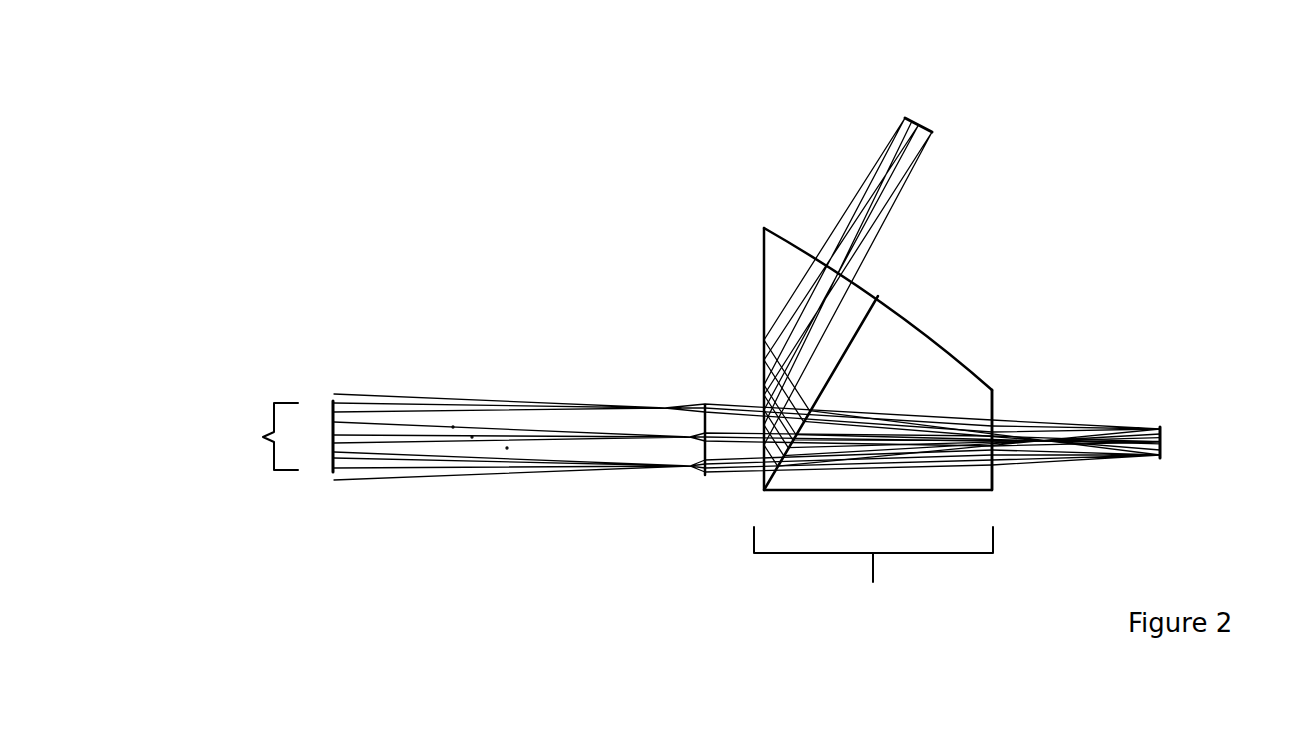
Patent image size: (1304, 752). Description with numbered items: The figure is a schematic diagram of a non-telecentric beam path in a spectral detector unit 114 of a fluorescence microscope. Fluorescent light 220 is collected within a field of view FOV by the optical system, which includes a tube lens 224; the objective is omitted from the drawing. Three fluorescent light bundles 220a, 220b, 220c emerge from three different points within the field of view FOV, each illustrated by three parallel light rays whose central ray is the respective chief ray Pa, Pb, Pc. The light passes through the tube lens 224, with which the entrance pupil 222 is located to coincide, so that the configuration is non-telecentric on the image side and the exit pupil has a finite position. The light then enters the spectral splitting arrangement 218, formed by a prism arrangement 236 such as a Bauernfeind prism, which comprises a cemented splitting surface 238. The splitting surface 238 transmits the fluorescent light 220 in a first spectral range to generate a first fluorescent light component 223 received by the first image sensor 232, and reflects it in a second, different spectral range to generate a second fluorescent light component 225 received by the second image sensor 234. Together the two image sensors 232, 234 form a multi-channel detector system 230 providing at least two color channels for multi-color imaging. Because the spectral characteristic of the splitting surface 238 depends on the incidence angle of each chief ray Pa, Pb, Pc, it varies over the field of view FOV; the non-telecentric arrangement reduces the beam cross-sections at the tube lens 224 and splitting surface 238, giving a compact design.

The spectral detector unit 114 is at (1167, 160).
The field of view FOV is at (250, 440).
The spectral splitting arrangement 218 is at (873, 433).
The fluorescent light 220 is at (580, 432).
The first fluorescent light bundle 220a is at (362, 393).
The second fluorescent light bundle 220b is at (395, 404).
The third fluorescent light bundle 220c is at (425, 413).
The entrance pupil 222 is at (706, 405).
The first fluorescent light component 223 is at (1087, 462).
The tube lens 224 is at (705, 458).
The second fluorescent light component 225 is at (840, 218).
The multi-channel detector system 230 is at (1180, 367).
The first image sensor 232 is at (1162, 442).
The second image sensor 234 is at (928, 127).
The prism arrangement 236 is at (991, 390).
The splitting surface 238 is at (878, 297).
The chief ray Pa is at (453, 427).
The chief ray Pb is at (472, 437).
The chief ray Pc is at (507, 448).